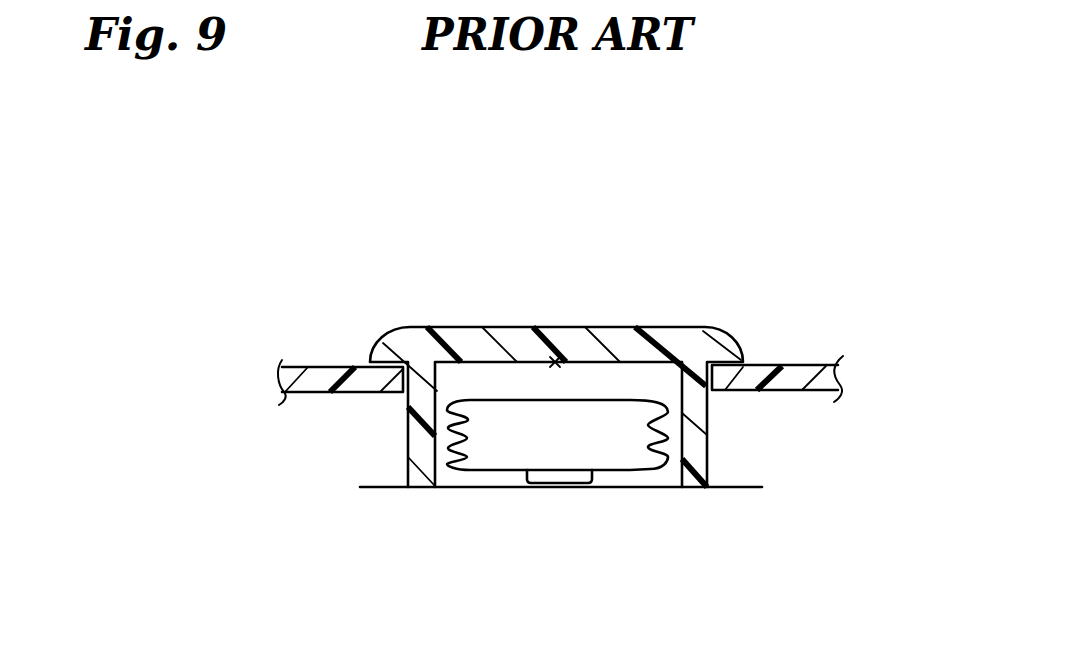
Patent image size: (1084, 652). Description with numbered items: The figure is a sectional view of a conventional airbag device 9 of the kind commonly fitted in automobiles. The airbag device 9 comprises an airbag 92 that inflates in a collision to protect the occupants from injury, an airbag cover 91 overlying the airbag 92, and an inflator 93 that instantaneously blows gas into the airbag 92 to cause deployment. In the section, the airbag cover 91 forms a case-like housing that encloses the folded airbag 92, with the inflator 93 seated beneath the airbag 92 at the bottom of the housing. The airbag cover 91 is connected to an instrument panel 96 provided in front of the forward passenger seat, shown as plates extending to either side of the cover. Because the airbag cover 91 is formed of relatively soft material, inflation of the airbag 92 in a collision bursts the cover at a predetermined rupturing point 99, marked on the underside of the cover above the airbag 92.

The airbag device 9 is at (731, 254).
The airbag cover 91 is at (625, 343).
The airbag 92 is at (617, 443).
The inflator 93 is at (560, 477).
The instrument panel 96 is at (331, 375).
The rupturing point 99 is at (555, 362).